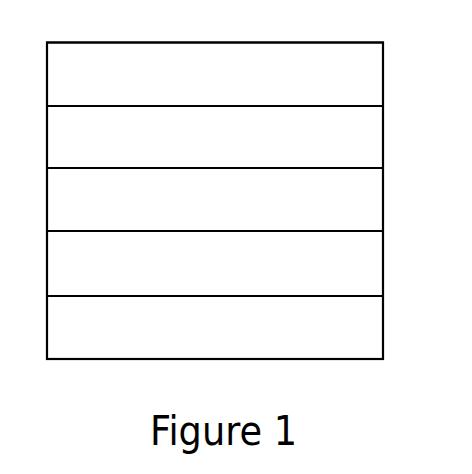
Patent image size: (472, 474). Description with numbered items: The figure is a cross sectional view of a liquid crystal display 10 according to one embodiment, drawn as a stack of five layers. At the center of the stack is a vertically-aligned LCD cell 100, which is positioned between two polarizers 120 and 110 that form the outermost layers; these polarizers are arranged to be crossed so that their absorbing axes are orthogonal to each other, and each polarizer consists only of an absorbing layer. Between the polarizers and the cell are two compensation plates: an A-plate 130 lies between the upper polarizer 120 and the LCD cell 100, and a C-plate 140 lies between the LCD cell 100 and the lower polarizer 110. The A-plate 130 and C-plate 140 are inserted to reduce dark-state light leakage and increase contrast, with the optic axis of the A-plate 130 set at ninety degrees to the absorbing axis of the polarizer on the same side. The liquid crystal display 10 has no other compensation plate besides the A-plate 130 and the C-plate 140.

The liquid crystal display 10 is at (240, 36).
The polarizer 120 is at (215, 75).
The A-plate 130 is at (215, 137).
The vertically-aligned LCD cell 100 is at (215, 199).
The C-plate 140 is at (215, 263).
The polarizer 110 is at (215, 327).